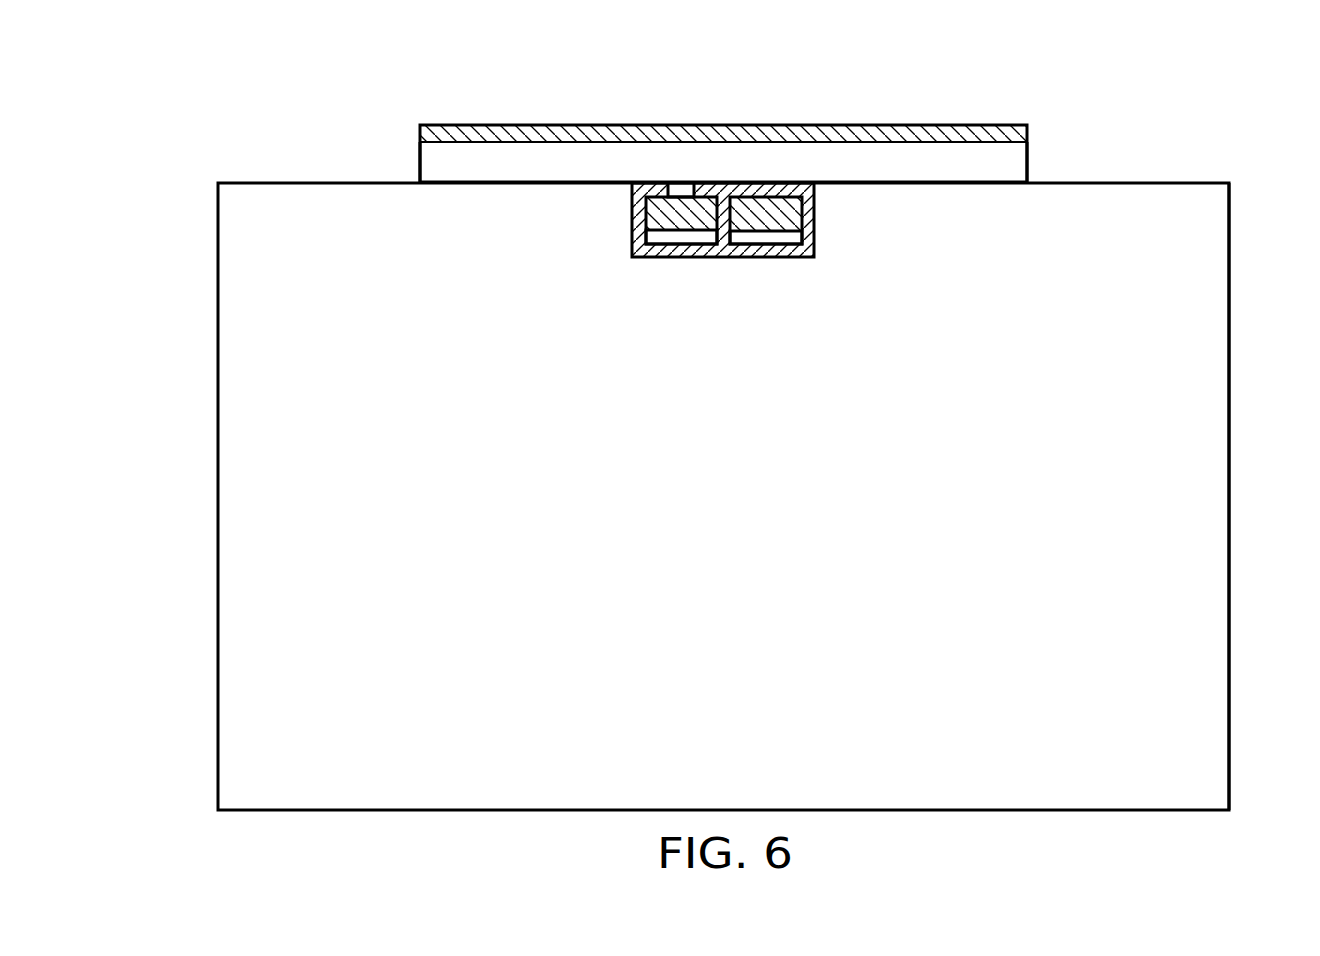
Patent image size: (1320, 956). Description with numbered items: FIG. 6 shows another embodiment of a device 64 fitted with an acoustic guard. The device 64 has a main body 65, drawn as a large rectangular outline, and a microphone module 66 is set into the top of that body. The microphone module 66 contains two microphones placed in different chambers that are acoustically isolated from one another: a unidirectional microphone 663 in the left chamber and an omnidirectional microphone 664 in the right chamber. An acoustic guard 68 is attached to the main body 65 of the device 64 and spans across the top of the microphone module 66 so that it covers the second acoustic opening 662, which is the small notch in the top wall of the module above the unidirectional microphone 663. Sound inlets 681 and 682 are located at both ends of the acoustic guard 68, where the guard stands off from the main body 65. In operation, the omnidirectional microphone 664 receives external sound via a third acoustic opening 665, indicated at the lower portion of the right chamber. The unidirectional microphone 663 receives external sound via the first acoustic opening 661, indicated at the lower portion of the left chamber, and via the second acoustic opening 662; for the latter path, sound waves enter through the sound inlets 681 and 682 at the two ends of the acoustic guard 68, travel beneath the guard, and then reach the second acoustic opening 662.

The device 64 is at (213, 377).
The main body 65 is at (1210, 381).
The microphone module 66 is at (713, 262).
The first acoustic opening 661 is at (657, 237).
The second acoustic opening 662 is at (683, 195).
The unidirectional microphone 663 is at (665, 203).
The omnidirectional microphone 664 is at (755, 207).
The third acoustic opening 665 is at (787, 238).
The acoustic guard 68 is at (793, 127).
The sound inlet 681 is at (1028, 163).
The sound inlet 682 is at (418, 163).